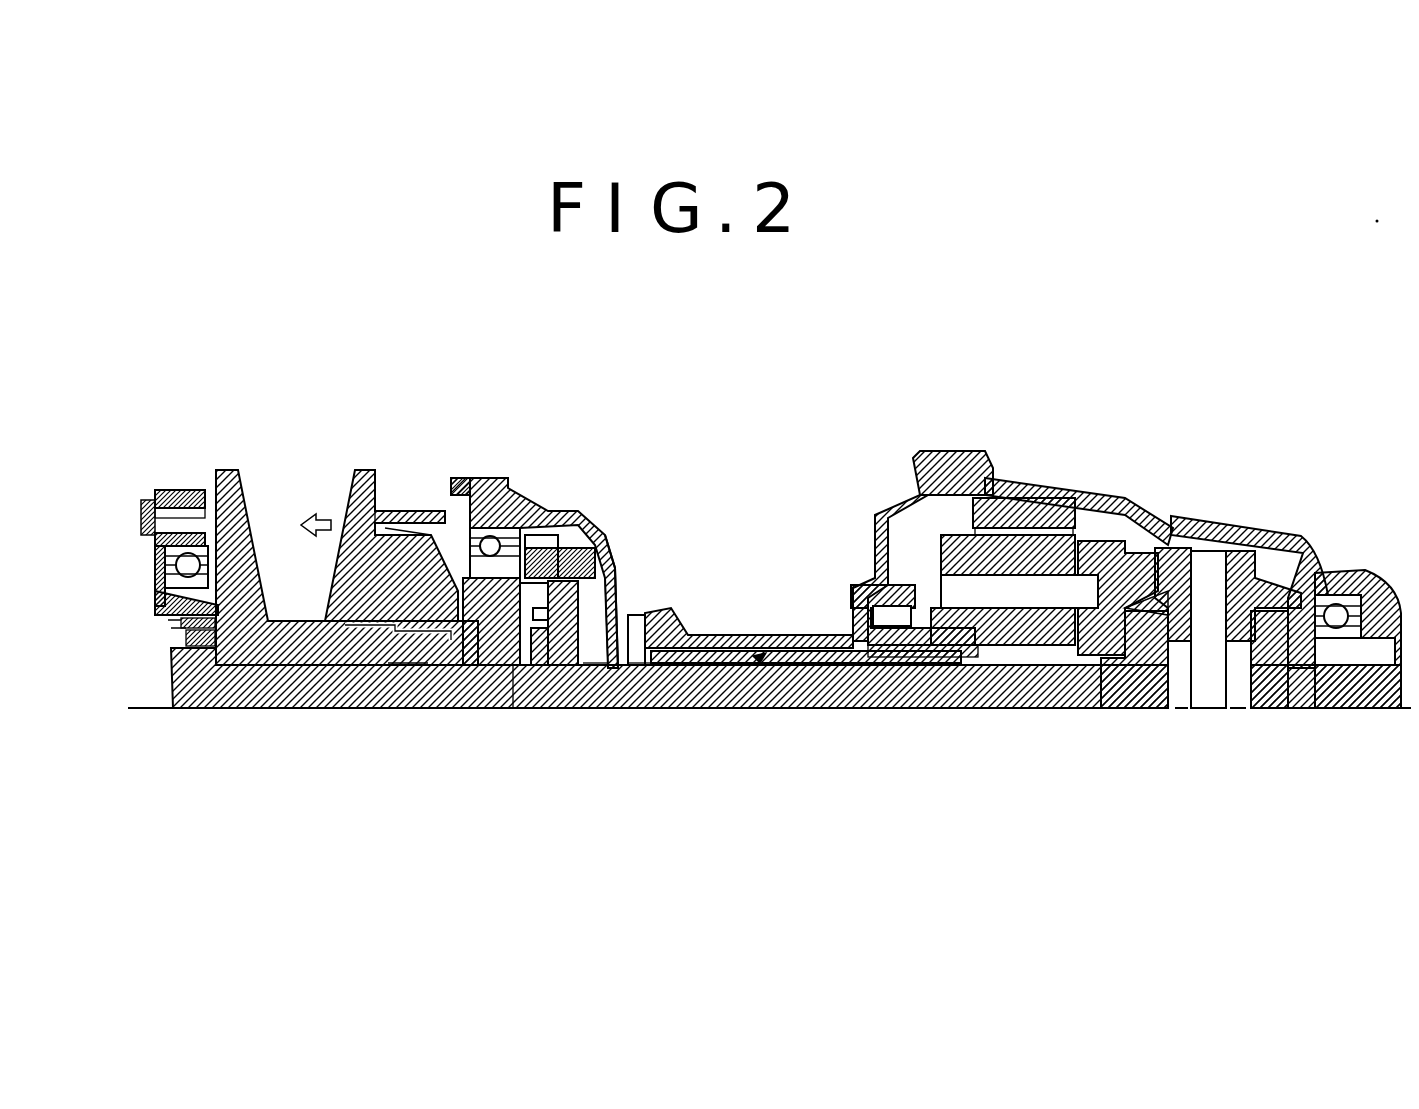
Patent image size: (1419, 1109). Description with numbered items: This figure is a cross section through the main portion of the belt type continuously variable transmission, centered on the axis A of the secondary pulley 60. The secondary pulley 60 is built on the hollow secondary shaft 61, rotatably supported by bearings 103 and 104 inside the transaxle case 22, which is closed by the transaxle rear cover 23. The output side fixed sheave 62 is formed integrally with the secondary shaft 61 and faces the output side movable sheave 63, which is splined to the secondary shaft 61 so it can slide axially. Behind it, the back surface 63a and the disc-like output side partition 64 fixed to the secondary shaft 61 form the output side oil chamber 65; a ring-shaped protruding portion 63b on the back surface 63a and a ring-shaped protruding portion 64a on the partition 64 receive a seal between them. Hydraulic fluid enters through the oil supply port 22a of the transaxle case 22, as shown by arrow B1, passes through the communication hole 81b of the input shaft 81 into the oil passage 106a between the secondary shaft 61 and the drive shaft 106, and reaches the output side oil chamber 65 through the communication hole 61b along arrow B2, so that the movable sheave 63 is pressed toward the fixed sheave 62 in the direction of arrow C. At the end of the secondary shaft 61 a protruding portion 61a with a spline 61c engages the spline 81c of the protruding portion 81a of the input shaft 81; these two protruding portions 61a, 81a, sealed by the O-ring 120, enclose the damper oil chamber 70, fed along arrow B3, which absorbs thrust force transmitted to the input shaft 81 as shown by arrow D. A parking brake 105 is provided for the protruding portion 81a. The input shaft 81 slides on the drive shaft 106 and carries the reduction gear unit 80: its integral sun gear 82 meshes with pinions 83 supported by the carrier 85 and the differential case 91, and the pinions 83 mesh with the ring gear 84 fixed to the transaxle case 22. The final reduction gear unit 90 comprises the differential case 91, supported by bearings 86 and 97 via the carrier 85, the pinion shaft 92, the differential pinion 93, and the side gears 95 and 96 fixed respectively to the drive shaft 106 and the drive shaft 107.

The transaxle case 22 is at (945, 447).
The oil supply port 22a is at (642, 620).
The transaxle rear cover 23 is at (170, 482).
The secondary pulley 60 is at (288, 432).
The secondary shaft 61 is at (247, 700).
The protruding portion 61a is at (535, 700).
The communication hole 61b is at (320, 700).
The spline 61c is at (460, 700).
The output side fixed sheave 62 is at (222, 462).
The output side movable sheave 63 is at (355, 462).
The back surface 63a is at (372, 478).
The ring-shaped protruding portion 63b is at (402, 503).
The output side partition 64 is at (480, 520).
The ring-shaped protruding portion 64a is at (448, 470).
The output side oil chamber 65 is at (330, 562).
The damper oil chamber 70 is at (560, 598).
The reduction gear unit 80 is at (905, 505).
The input shaft 81 is at (852, 700).
The protruding portion 81a is at (595, 572).
The communication hole 81b is at (632, 700).
The spline 81c is at (590, 520).
The sun gear 82 is at (958, 700).
The pinions 83 is at (1095, 497).
The ring gear 84 is at (1025, 508).
The carrier 85 is at (945, 545).
The bearing 86 is at (845, 593).
The final reduction gear unit 90 is at (1282, 548).
The differential case 91 is at (1162, 540).
The pinion shaft 92 is at (1198, 557).
The differential pinion 93 is at (1235, 590).
The side gear 95 is at (1135, 700).
The side gear 96 is at (1265, 700).
The bearing 97 is at (1328, 592).
The bearing 103 is at (147, 553).
The bearing 104 is at (505, 515).
The parking brake 105 is at (530, 535).
The drive shaft 106 is at (720, 700).
The oil passage 106a is at (497, 700).
The drive shaft 107 is at (1347, 700).
The O-ring 120 is at (578, 548).
The axis A is at (680, 700).
The arrow B1 is at (631, 600).
The arrow B2 is at (400, 700).
The arrow B3 is at (585, 700).
The arrow C is at (310, 500).
The arrow D is at (758, 645).